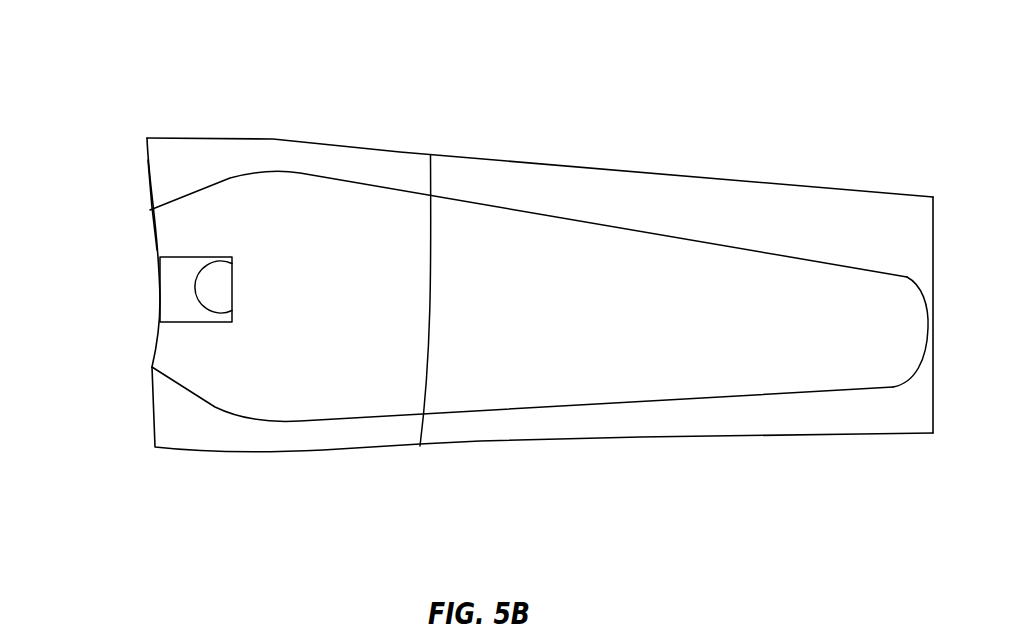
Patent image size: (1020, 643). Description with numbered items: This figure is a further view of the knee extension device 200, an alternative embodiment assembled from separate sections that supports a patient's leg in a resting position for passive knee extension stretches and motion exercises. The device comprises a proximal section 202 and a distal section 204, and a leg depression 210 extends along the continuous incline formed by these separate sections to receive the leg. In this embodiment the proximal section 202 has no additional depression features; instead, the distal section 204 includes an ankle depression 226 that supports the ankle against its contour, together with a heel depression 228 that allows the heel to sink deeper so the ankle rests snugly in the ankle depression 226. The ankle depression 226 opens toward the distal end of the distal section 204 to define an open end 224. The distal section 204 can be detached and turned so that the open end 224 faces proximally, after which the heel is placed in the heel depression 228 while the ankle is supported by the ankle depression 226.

The knee extension device 200 is at (208, 103).
The proximal section 202 is at (735, 431).
The distal section 204 is at (322, 448).
The leg depression 210 is at (393, 217).
The open end 224 is at (150, 217).
The ankle depression 226 is at (172, 266).
The heel depression 228 is at (205, 293).